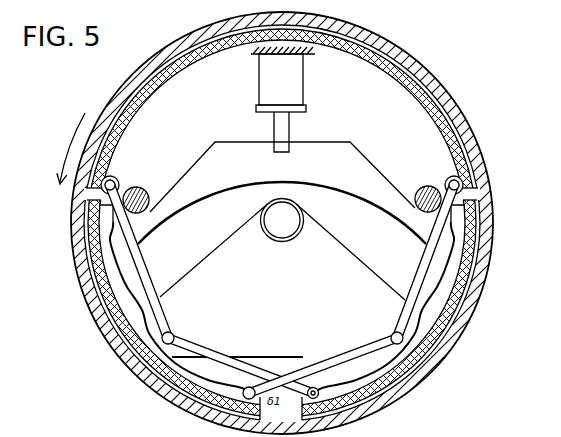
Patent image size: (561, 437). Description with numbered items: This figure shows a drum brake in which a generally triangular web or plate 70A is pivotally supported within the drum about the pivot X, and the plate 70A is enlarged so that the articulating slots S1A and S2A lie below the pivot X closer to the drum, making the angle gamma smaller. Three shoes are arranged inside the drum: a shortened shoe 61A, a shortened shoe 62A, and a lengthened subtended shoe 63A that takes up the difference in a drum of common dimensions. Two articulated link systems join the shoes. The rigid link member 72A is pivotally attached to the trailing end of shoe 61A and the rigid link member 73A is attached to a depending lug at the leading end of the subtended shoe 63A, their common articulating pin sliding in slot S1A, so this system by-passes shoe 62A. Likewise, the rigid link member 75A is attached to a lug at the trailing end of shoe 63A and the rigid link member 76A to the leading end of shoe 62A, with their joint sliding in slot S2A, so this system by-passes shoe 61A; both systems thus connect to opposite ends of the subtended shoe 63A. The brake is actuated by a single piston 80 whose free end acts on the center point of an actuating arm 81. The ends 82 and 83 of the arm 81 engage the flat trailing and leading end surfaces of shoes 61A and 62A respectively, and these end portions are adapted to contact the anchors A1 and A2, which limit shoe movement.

The subtended shoe 63A is at (376, 55).
The shoe 61A is at (108, 331).
The shoe 62A is at (444, 326).
The piston 80 is at (281, 137).
The actuating arm 81 is at (341, 173).
The end of actuating arm 82 is at (99, 213).
The end of actuating arm 83 is at (458, 212).
The anchor A1 is at (130, 189).
The anchor A2 is at (424, 188).
The rigid link member 75A is at (140, 266).
The rigid link member 73A is at (425, 257).
The rigid link member 76A is at (213, 356).
The rigid link member 72A is at (330, 364).
The articulating slot S1A is at (404, 327).
The articulating slot S2A is at (165, 328).
The plate 70A is at (336, 306).
The pivot X is at (272, 237).